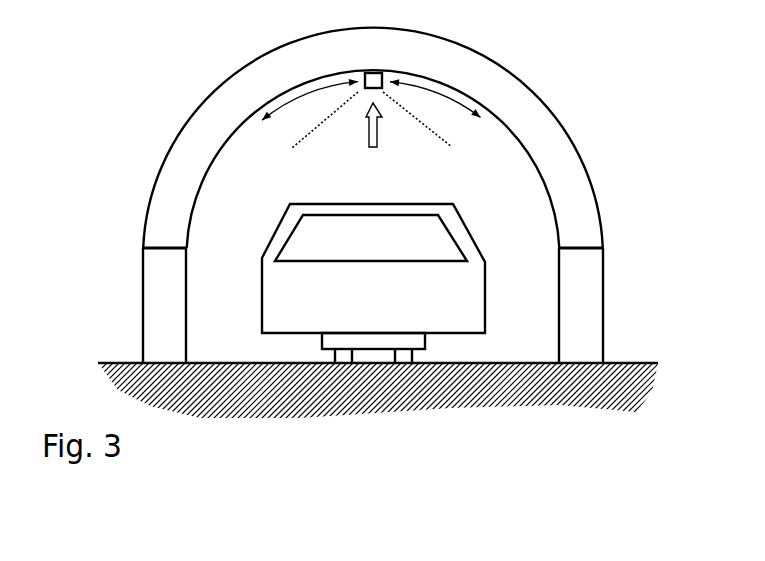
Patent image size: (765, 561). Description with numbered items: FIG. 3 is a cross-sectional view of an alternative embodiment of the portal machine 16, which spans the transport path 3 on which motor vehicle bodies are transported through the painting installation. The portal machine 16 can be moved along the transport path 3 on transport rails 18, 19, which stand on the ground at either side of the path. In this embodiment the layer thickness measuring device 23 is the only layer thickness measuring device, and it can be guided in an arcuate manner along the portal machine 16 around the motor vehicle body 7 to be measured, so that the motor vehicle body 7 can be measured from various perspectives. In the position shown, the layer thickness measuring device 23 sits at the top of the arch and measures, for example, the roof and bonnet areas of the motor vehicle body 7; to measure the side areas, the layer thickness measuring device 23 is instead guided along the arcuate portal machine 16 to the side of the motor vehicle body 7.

The portal machine 16 is at (193, 110).
The transport rail 18 is at (143, 338).
The transport rail 19 is at (603, 343).
The layer thickness measuring device 23 is at (364, 73).
The motor vehicle body 7 is at (277, 233).
The transport path 3 is at (425, 338).